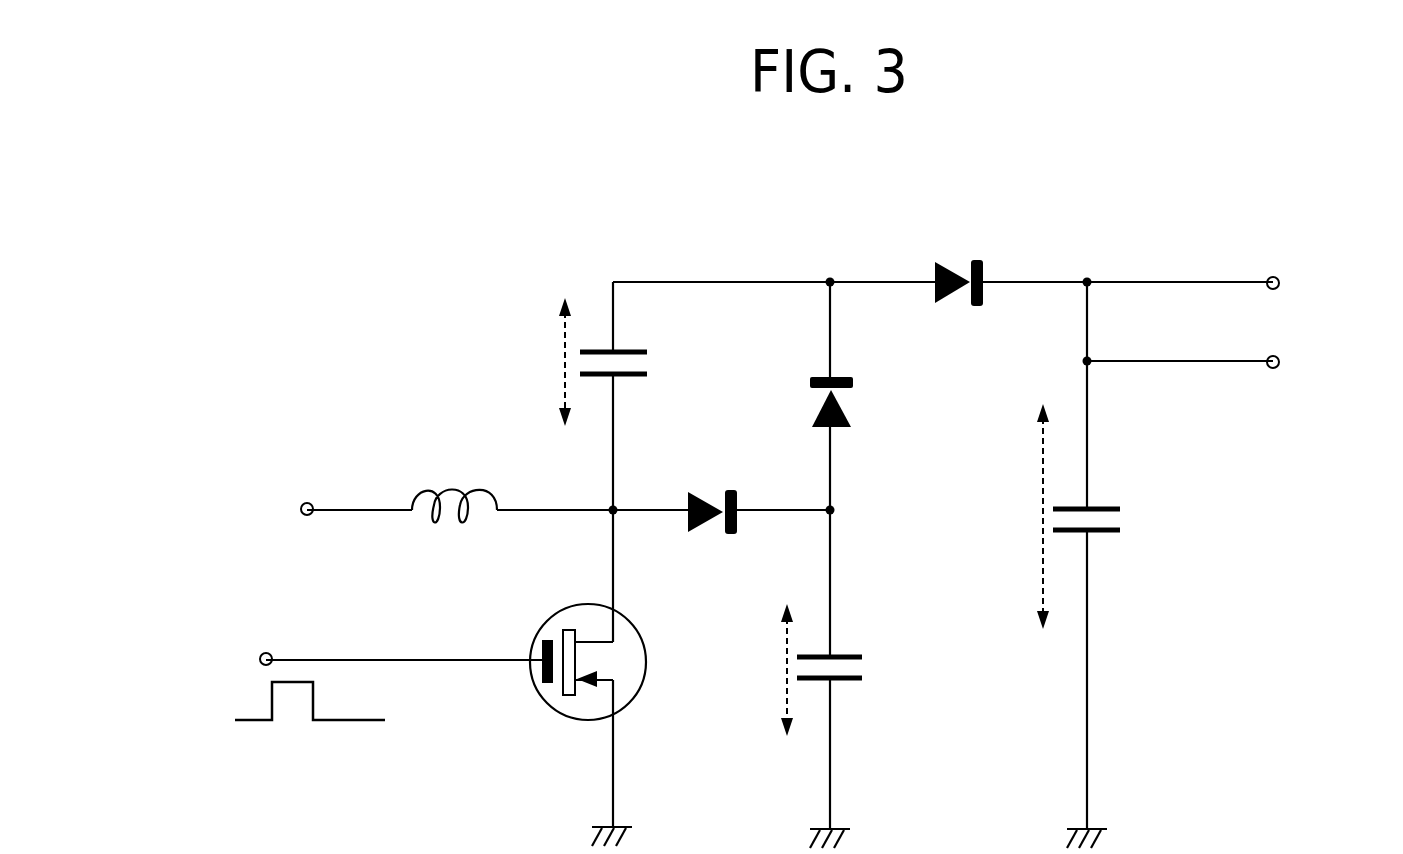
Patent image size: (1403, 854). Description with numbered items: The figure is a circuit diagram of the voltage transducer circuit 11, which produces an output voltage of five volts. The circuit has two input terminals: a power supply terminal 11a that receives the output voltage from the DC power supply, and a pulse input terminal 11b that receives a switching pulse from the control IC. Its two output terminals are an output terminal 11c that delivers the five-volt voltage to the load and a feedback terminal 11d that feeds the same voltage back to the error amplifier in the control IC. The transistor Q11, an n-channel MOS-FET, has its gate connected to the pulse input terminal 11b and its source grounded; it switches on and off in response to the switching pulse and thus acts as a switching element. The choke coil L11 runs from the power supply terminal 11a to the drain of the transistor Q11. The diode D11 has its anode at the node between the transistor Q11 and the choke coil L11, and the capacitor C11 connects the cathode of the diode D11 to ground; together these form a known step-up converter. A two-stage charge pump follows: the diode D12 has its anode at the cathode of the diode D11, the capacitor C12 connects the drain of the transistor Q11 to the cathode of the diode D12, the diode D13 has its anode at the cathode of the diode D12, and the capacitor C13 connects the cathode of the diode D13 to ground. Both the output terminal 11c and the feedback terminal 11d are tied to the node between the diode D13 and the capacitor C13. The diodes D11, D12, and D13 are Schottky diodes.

The voltage transducer circuit 11 is at (430, 240).
The power supply terminal 11a is at (300, 509).
The pulse input terminal 11b is at (259, 659).
The output terminal 11c is at (1280, 286).
The feedback terminal 11d is at (1280, 365).
The choke coil L11 is at (462, 482).
The capacitor C12 is at (650, 363).
The diode D11 is at (712, 494).
The diode D12 is at (852, 410).
The diode D13 is at (948, 262).
The transistor Q11 is at (685, 625).
The capacitor C11 is at (866, 670).
The capacitor C13 is at (1123, 521).